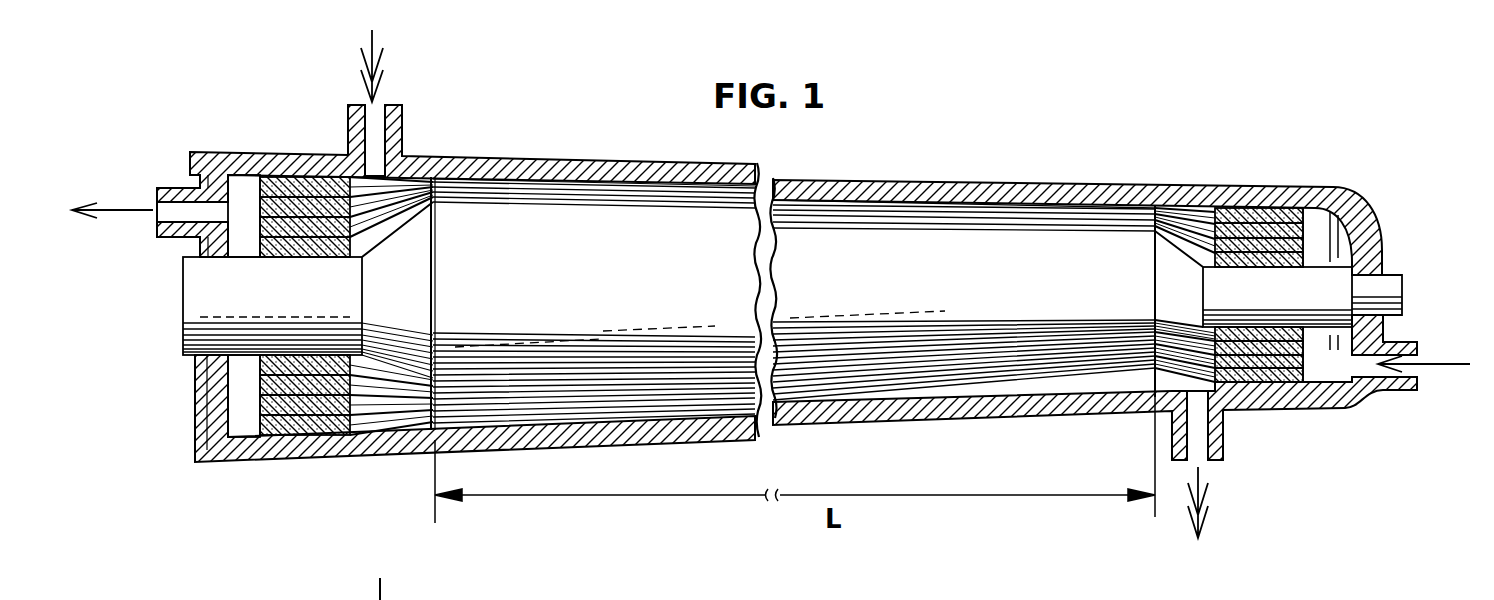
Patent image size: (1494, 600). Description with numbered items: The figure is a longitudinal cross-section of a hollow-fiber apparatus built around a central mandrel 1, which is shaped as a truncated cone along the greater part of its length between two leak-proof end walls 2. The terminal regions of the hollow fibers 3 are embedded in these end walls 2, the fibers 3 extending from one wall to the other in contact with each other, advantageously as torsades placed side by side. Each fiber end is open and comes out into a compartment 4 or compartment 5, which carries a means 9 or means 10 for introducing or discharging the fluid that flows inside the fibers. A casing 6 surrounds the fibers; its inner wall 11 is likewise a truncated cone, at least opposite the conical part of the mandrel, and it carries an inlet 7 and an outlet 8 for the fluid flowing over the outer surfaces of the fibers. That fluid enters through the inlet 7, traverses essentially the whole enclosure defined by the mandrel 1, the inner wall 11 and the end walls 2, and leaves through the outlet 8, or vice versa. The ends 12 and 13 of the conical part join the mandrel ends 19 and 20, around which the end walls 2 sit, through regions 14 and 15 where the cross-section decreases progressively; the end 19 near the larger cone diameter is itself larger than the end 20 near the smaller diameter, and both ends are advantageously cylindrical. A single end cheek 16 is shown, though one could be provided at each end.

The mandrel 1 is at (794, 300).
The leak-proof end walls 2 is at (307, 430).
The hollow fibers 3 is at (960, 218).
The compartment 4 is at (1342, 242).
The compartment 5 is at (248, 188).
The casing 6 is at (647, 163).
The inlet 7 is at (355, 123).
The outlet 8 is at (1198, 433).
The means for introduction or discharge of fluid 9 is at (1402, 390).
The means for introduction or discharge of fluid 10 is at (175, 190).
The inner wall of the casing 11 is at (690, 186).
The end of the truncated-cone part 12 is at (440, 170).
The end of the truncated-cone part 13 is at (1155, 213).
The transition region 14 is at (390, 385).
The transition region 15 is at (1175, 250).
The end cheek 16 is at (215, 388).
The end of the mandrel 19 is at (215, 284).
The end of the mandrel 20 is at (1302, 297).